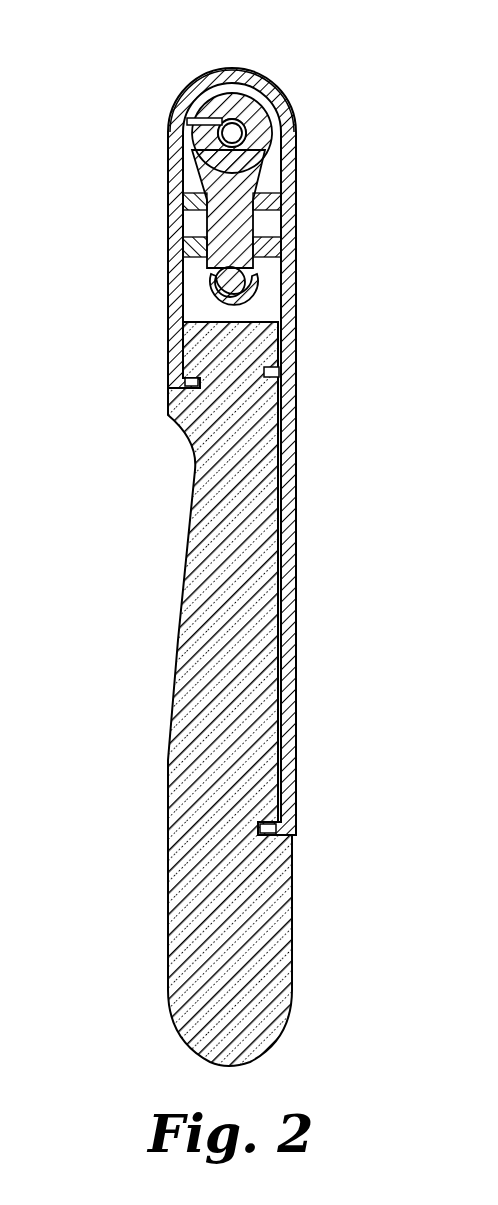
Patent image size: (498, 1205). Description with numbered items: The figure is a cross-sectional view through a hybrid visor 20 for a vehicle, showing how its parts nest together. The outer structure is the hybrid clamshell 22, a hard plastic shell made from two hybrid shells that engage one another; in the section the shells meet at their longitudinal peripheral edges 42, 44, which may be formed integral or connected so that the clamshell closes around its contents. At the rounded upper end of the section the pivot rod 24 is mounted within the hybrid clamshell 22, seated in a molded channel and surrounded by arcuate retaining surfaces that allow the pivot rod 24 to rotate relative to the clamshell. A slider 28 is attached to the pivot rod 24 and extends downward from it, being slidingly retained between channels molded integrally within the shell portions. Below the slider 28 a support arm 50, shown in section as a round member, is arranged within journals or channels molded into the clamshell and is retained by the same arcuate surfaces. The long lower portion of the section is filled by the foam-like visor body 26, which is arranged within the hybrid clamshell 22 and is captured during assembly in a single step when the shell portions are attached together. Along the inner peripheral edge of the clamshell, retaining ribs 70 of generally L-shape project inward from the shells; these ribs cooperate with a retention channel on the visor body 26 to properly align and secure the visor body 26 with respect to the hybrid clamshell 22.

The hybrid visor 20 is at (98, 449).
The hybrid clamshell 22 is at (163, 203).
The pivot rod 24 is at (283, 128).
The visor body 26 is at (195, 665).
The slider 28 is at (233, 200).
The longitudinal peripheral edge 42 is at (210, 68).
The longitudinal peripheral edge 44 is at (250, 68).
The support arm 50 is at (247, 280).
The retaining rib 70 is at (178, 368).